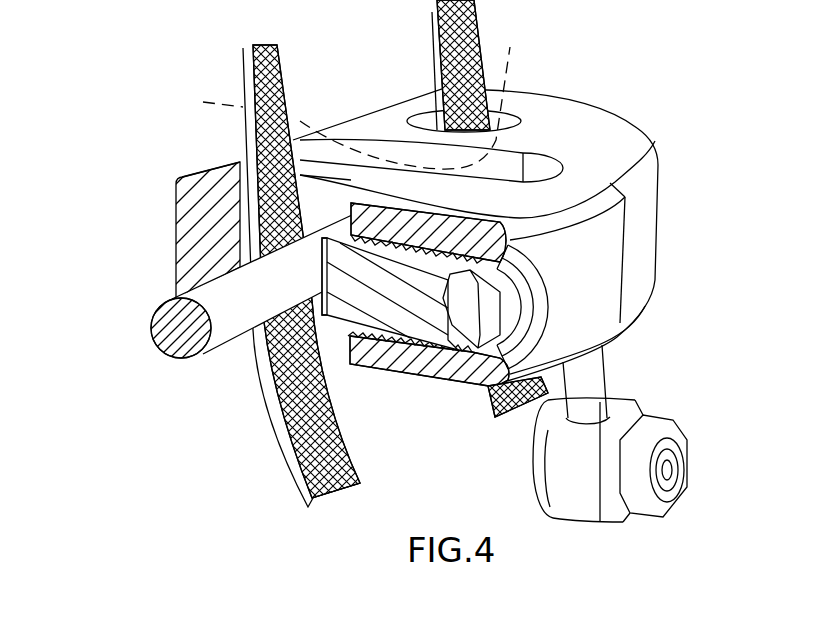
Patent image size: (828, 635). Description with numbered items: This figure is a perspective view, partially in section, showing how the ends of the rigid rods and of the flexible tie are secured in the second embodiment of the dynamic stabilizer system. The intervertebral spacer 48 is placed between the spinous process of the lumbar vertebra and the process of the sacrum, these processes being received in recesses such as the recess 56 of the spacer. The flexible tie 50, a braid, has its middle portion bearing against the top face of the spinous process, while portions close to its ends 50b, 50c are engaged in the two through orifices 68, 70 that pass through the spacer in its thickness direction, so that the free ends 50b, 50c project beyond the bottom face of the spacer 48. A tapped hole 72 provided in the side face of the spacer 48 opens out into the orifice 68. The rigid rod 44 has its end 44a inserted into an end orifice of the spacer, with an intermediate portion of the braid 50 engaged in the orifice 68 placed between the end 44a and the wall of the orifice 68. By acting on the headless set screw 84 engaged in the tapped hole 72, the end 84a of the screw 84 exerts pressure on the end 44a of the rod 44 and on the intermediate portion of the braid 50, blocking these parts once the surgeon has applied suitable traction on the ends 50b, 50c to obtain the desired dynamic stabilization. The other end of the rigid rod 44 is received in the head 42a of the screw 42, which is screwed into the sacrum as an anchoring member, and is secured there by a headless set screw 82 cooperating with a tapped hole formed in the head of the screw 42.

The screw 42 is at (672, 407).
The head of the screw 42a is at (579, 508).
The rigid rod 44 is at (163, 302).
The end of the rigid rod 44a is at (232, 315).
The intervertebral spacer 48 is at (606, 107).
The flexible tie 50 is at (432, 30).
The end of the braid 50b is at (337, 488).
The end of the braid 50c is at (517, 418).
The recess 56 is at (362, 153).
The orifice 68 is at (333, 201).
The orifice 70 is at (437, 118).
The tapped hole 72 is at (533, 297).
The headless set screw 82 is at (682, 470).
The headless set screw 84 is at (400, 313).
The end of the screw 84a is at (325, 283).